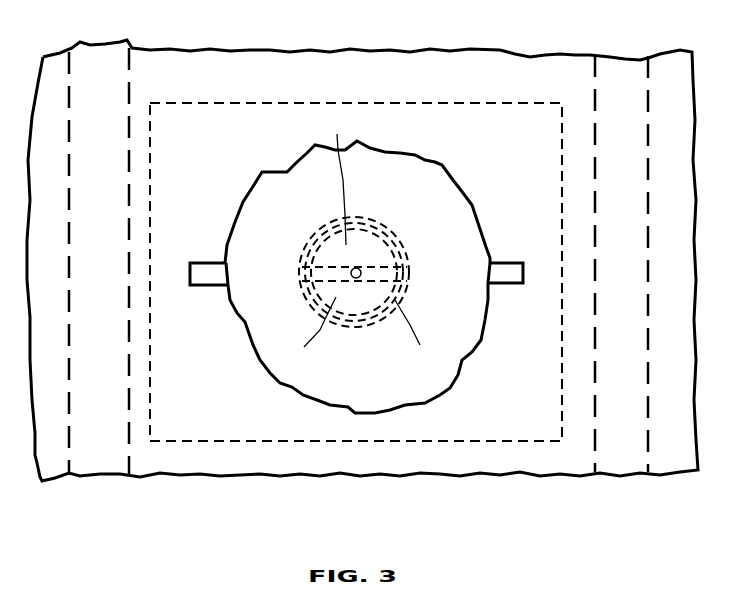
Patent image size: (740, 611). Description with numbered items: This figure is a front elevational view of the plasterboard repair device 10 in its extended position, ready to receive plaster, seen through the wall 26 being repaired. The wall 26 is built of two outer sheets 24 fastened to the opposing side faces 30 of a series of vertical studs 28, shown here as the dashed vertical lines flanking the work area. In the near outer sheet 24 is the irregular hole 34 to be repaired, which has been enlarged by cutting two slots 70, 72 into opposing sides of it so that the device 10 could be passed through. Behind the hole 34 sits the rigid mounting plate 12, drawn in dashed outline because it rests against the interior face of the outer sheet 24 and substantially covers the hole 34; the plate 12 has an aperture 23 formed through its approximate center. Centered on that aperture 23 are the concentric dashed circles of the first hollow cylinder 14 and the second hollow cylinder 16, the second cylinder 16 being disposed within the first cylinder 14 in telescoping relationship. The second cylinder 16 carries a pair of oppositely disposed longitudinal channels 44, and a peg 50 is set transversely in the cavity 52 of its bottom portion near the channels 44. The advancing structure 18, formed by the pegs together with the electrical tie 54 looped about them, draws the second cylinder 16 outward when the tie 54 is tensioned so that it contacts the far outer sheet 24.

The device 10 is at (403, 92).
The rigid mounting plate 12 is at (482, 113).
The first hollow cylinder 14 is at (370, 228).
The second hollow cylinder 16 is at (400, 250).
The advancing structure 18 is at (291, 250).
The aperture 23 is at (358, 280).
The outer sheets 24 is at (480, 464).
The wall 26 is at (230, 463).
The studs 28 is at (90, 455).
The side faces 30 is at (86, 358).
The hole 34 is at (464, 220).
The longitudinal channels 44 is at (302, 268).
The peg 50 is at (420, 330).
The cavity 52 is at (335, 187).
The electrical tie 54 is at (308, 328).
The slot 70 is at (206, 262).
The slot 72 is at (507, 262).